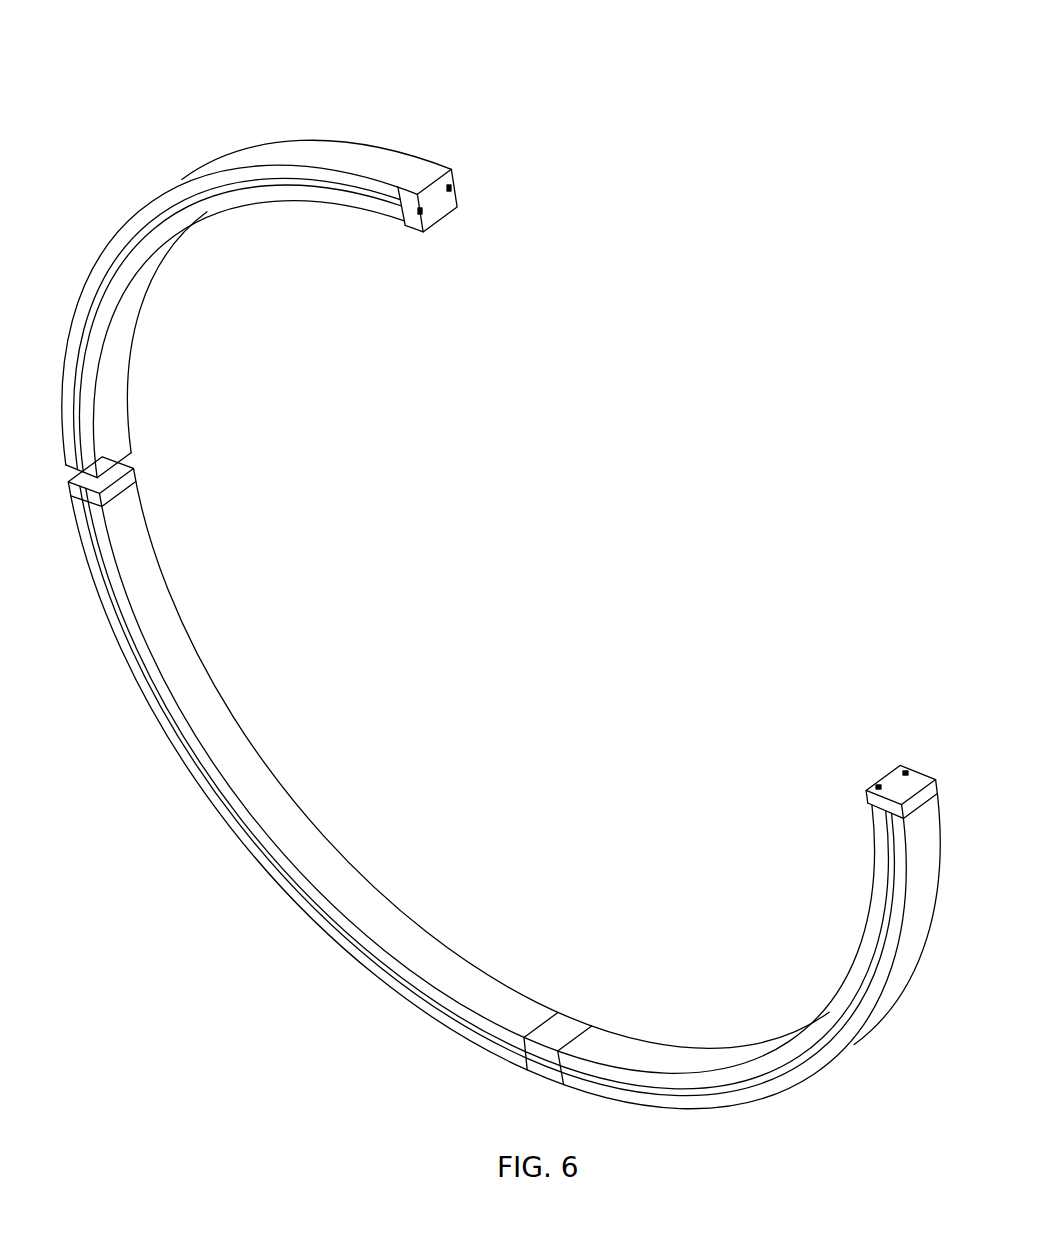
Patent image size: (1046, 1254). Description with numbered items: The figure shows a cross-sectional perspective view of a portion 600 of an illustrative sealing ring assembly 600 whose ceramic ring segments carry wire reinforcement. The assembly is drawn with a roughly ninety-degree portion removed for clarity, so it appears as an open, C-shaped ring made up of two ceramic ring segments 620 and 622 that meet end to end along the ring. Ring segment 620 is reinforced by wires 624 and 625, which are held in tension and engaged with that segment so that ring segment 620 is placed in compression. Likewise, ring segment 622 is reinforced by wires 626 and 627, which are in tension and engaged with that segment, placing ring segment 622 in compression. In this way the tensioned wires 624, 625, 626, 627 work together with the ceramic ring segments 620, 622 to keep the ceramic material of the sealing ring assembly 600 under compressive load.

The portion of sealing ring assembly 600 is at (501, 568).
The ceramic ring segment 620 is at (133, 518).
The ceramic ring segment 622 is at (132, 384).
The wire 624 is at (906, 768).
The wire 625 is at (878, 785).
The wire 626 is at (451, 187).
The wire 627 is at (422, 212).